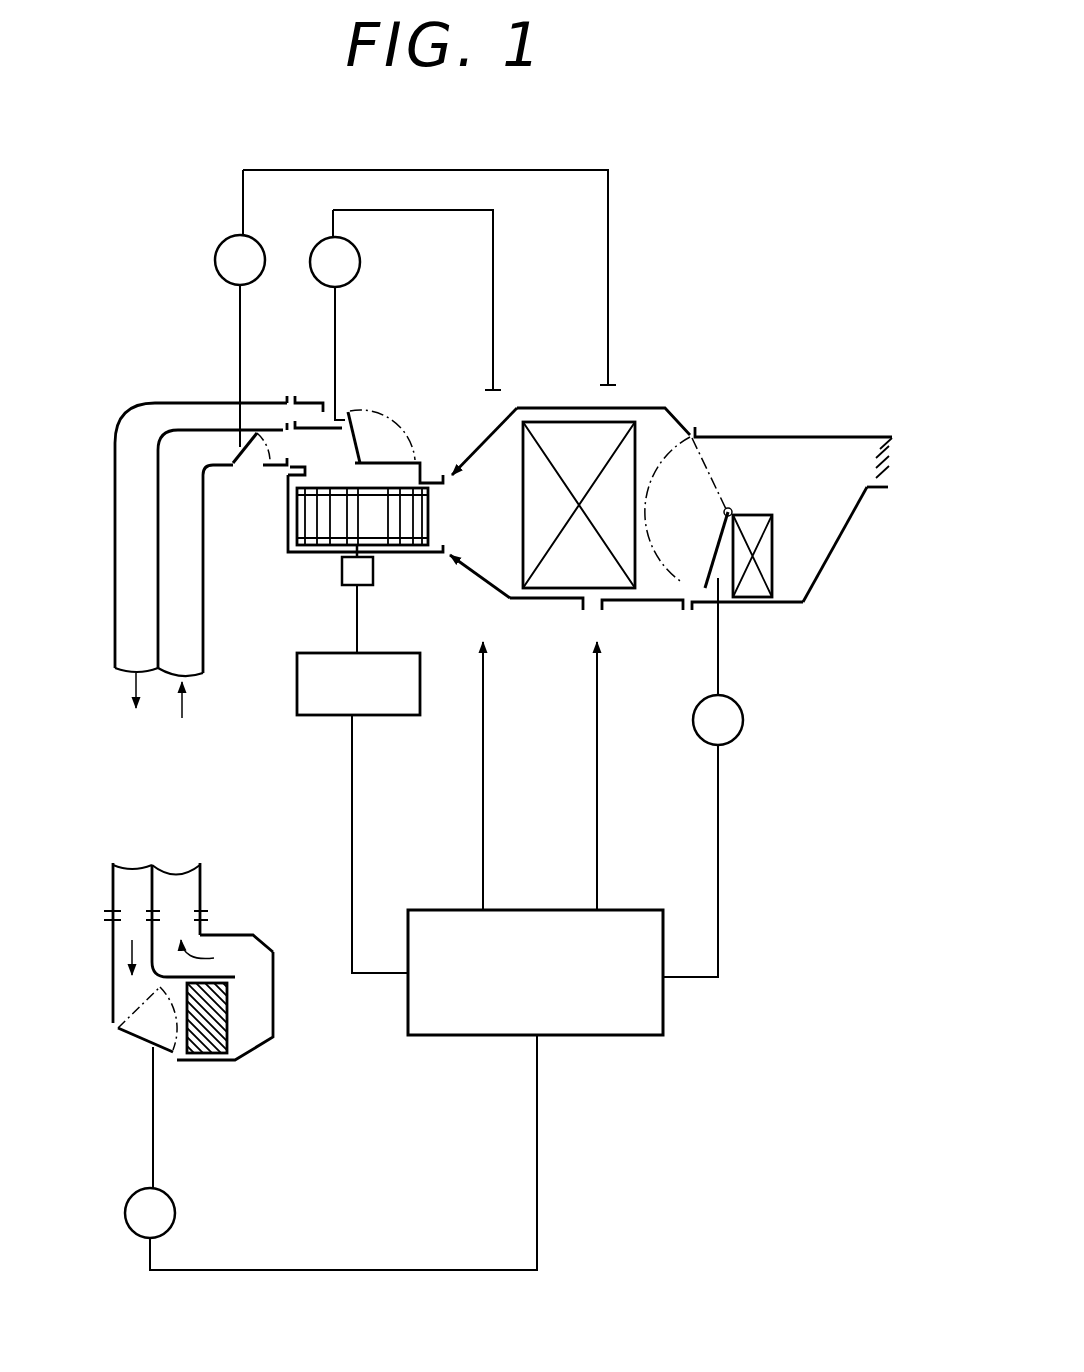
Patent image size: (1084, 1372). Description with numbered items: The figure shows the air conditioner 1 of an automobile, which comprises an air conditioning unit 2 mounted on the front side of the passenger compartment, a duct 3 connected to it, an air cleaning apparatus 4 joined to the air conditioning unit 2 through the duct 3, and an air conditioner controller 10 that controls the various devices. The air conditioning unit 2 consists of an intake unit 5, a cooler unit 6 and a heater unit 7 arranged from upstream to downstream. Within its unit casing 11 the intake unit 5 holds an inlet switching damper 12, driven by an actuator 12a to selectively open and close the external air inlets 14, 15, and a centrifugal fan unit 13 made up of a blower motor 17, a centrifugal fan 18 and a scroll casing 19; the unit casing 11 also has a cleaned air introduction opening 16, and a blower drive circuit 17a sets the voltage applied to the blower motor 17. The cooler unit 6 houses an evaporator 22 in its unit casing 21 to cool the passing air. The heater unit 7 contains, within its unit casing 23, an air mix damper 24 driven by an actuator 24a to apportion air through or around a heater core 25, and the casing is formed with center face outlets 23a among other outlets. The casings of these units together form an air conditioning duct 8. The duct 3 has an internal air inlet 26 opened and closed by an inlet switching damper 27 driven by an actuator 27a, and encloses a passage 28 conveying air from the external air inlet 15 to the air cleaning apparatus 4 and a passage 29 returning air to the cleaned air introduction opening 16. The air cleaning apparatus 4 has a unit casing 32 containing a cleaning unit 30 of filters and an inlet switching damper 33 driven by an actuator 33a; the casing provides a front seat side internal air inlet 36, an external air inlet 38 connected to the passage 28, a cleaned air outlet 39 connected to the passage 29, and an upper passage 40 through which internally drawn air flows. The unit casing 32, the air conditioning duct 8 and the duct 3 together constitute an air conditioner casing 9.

The air conditioner 1 is at (772, 285).
The air conditioning unit 2 is at (805, 428).
The duct 3 is at (115, 549).
The air cleaning apparatus 4 is at (265, 935).
The intake unit 5 is at (297, 396).
The cooler unit 6 is at (547, 401).
The heater unit 7 is at (814, 594).
The air conditioning duct 8 is at (709, 430).
The air conditioner casing 9 is at (113, 636).
The air conditioner controller 10 is at (640, 1025).
The unit casing 11 is at (337, 420).
The inlet switching damper 12 is at (395, 458).
The actuator 12a is at (360, 268).
The centrifugal fan unit 13 is at (295, 563).
The external air inlet 14 is at (425, 460).
The external air inlet 15 is at (321, 413).
The cleaned air introduction opening 16 is at (313, 448).
The blower motor 17 is at (362, 578).
The blower drive circuit 17a is at (380, 704).
The centrifugal fan 18 is at (402, 532).
The scroll casing 19 is at (288, 548).
The unit casing 21 is at (550, 607).
The evaporator 22 is at (603, 433).
The unit casing 23 is at (838, 437).
The center face outlets 23a is at (866, 497).
The air mix damper 24 is at (680, 607).
The actuator 24a is at (743, 722).
The heater core 25 is at (748, 600).
The internal air inlet 26 is at (257, 466).
The inlet switching damper 27 is at (232, 447).
The actuator 27a is at (223, 262).
The passage 28 is at (135, 503).
The passage 29 is at (195, 660).
The cleaning unit 30 is at (210, 1047).
The unit casing 32 is at (273, 948).
The inlet switching damper 33 is at (145, 1045).
The actuator 33a is at (175, 1210).
The front seat side internal air inlet 36 is at (130, 1033).
The external air inlet 38 is at (127, 918).
The cleaned air outlet 39 is at (187, 915).
The upper passage 40 is at (258, 1018).